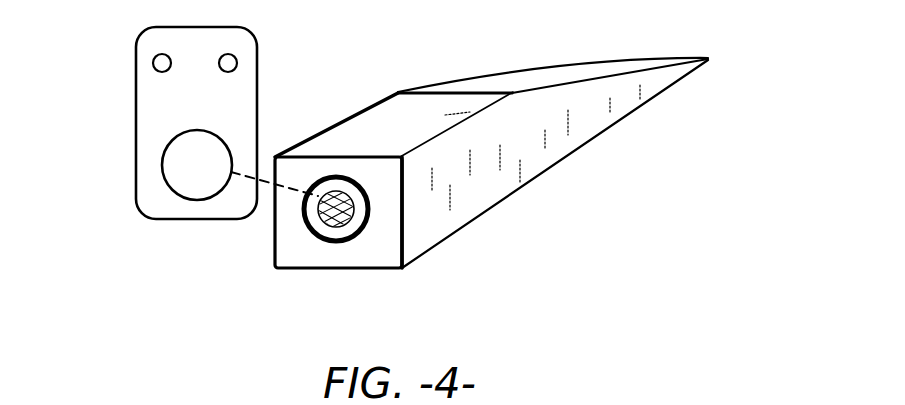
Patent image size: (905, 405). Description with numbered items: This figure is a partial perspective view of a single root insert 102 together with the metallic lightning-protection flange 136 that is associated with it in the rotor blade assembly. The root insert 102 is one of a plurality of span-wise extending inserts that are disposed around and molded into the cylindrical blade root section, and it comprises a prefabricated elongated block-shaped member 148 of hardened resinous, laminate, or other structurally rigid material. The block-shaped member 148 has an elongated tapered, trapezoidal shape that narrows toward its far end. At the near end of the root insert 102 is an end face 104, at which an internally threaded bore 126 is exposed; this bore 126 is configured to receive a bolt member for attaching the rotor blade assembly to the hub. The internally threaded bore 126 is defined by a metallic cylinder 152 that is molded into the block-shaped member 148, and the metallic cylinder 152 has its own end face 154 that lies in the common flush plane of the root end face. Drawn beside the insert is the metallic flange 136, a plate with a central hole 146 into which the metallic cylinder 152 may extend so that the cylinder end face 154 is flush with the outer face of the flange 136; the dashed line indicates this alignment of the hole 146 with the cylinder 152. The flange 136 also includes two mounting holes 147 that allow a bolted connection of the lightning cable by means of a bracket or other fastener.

The root insert 102 is at (800, 45).
The end face 104 is at (363, 253).
The internally threaded bore 126 is at (343, 253).
The metallic flange 136 is at (135, 122).
The hole 146 is at (191, 178).
The mounting holes 147 is at (239, 62).
The block-shaped member 148 is at (539, 152).
The metallic cylinder 152 is at (329, 226).
The end face 154 is at (325, 182).